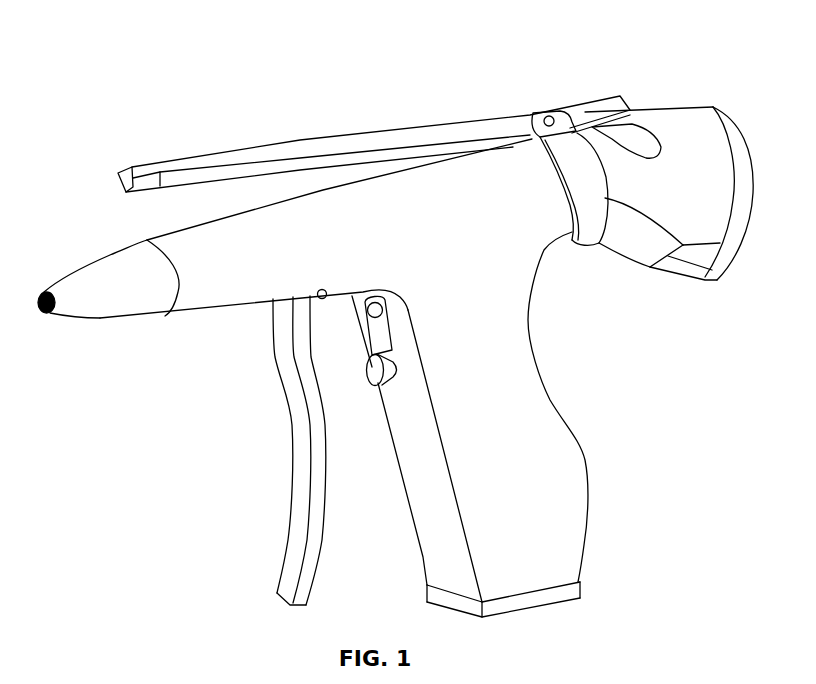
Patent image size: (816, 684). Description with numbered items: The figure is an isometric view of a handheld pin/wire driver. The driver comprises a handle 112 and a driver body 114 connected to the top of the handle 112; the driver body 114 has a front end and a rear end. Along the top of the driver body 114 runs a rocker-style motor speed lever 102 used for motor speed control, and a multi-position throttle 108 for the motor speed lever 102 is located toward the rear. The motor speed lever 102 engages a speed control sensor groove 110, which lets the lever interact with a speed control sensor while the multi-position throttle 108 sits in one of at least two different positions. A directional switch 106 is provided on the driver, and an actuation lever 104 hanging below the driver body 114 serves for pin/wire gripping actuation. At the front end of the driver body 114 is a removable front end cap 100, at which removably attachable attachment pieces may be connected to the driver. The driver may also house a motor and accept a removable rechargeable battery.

The removable front end cap 100 is at (95, 272).
The rocker-style motor speed lever 102 is at (217, 152).
The actuation lever 104 is at (287, 567).
The directional switch 106 is at (382, 332).
The multi-position throttle 108 is at (587, 230).
The speed control sensor groove 110 is at (636, 138).
The handle 112 is at (540, 520).
The driver body 114 is at (305, 235).